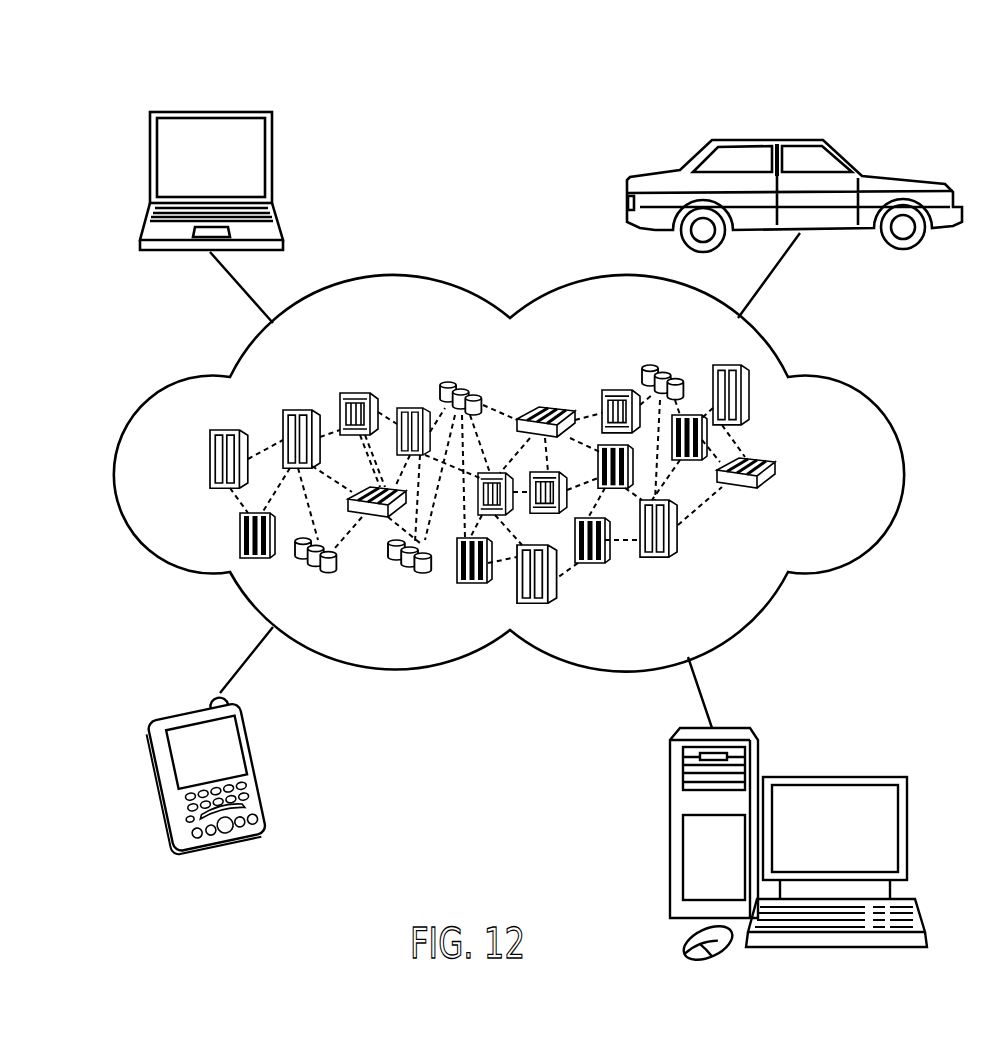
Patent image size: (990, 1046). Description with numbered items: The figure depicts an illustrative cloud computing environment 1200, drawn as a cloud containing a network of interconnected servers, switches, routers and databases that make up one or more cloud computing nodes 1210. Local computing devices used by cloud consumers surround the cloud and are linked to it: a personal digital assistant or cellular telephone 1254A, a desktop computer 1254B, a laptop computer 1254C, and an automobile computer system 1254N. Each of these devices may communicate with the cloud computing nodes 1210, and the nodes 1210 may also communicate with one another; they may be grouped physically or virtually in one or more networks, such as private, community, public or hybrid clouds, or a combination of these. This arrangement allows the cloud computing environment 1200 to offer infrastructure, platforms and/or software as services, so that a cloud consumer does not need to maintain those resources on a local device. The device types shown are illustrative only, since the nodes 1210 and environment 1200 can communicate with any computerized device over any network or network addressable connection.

The cloud computing environment 1200 is at (850, 380).
The cloud computing nodes 1210 is at (786, 475).
The personal digital assistant (PDA) or cellular telephone 1254A is at (190, 713).
The desktop computer 1254B is at (837, 775).
The laptop computer 1254C is at (212, 112).
The automobile computer system 1254N is at (770, 140).